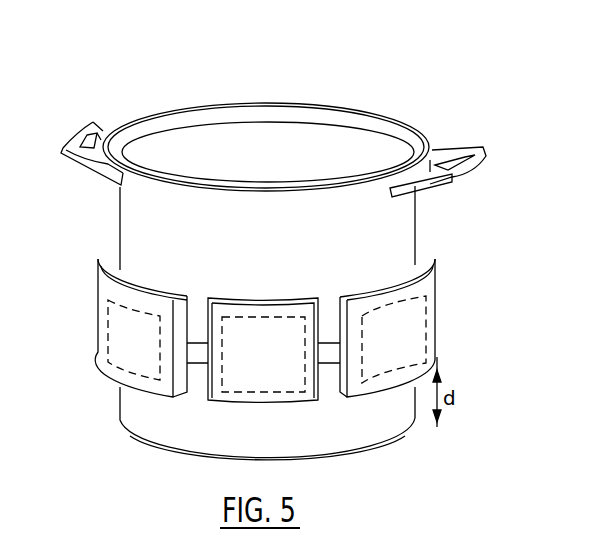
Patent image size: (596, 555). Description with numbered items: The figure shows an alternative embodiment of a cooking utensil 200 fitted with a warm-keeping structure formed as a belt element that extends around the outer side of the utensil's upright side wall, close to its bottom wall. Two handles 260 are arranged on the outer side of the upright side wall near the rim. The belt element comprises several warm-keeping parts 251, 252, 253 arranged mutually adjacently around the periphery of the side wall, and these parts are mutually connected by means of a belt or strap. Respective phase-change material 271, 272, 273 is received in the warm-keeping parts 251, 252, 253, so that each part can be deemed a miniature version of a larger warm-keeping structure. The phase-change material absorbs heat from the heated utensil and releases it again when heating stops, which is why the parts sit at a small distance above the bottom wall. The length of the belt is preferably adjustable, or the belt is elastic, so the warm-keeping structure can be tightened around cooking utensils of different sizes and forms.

The cooking utensil 200 is at (388, 112).
The handles 260 is at (490, 140).
The warm-keeping part 251 is at (112, 346).
The warm-keeping part 252 is at (266, 393).
The warm-keeping part 253 is at (432, 334).
The phase-change material 271 is at (107, 302).
The phase-change material 272 is at (270, 337).
The phase-change material 273 is at (418, 312).